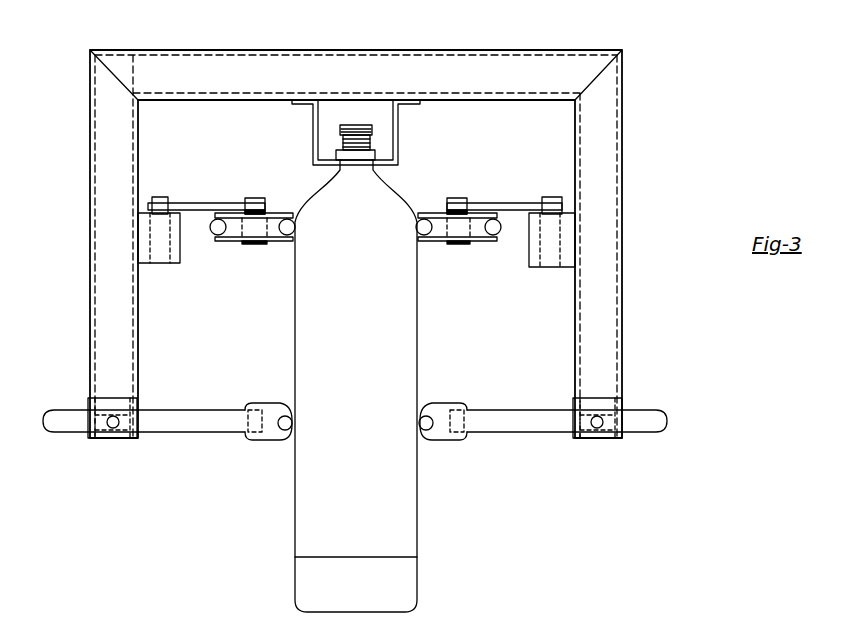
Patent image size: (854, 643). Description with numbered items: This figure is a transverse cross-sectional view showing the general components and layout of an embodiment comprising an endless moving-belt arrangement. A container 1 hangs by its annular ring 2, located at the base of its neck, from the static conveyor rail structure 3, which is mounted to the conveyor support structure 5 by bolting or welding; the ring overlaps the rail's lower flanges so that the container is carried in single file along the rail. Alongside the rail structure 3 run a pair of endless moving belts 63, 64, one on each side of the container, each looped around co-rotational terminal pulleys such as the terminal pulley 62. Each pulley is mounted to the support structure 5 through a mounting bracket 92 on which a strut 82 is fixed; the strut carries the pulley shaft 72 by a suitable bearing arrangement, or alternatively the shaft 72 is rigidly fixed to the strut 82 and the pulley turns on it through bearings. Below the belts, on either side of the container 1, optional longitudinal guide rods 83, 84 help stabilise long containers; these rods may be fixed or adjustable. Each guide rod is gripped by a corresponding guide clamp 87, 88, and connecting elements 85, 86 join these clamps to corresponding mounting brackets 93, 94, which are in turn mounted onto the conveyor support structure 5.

The container 1 is at (314, 530).
The annular ring 2 is at (378, 158).
The conveyor rail structure 3 is at (410, 118).
The conveyor support structure 5 is at (243, 80).
The second terminal pulley 62 is at (226, 240).
The endless moving belt 63 is at (285, 240).
The endless moving belt 64 is at (425, 242).
The shaft 72 is at (255, 205).
The strut 82 is at (192, 205).
The longitudinal guide rod 83 is at (283, 440).
The longitudinal guide rod 84 is at (430, 440).
The connecting element 85 is at (185, 422).
The connecting element 86 is at (520, 422).
The guide clamp 87 is at (262, 440).
The guide clamp 88 is at (445, 440).
The mounting bracket 92 is at (160, 240).
The mounting bracket 93 is at (107, 437).
The mounting bracket 94 is at (600, 440).